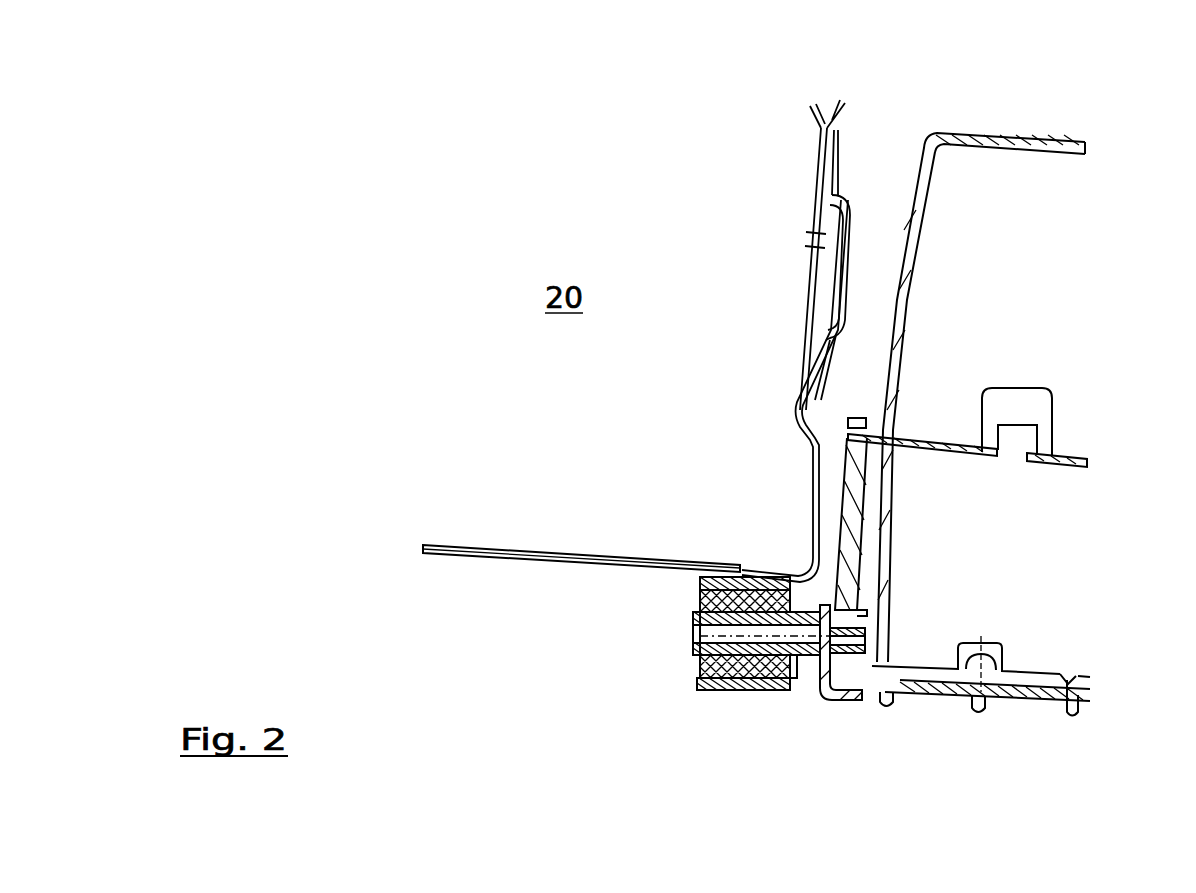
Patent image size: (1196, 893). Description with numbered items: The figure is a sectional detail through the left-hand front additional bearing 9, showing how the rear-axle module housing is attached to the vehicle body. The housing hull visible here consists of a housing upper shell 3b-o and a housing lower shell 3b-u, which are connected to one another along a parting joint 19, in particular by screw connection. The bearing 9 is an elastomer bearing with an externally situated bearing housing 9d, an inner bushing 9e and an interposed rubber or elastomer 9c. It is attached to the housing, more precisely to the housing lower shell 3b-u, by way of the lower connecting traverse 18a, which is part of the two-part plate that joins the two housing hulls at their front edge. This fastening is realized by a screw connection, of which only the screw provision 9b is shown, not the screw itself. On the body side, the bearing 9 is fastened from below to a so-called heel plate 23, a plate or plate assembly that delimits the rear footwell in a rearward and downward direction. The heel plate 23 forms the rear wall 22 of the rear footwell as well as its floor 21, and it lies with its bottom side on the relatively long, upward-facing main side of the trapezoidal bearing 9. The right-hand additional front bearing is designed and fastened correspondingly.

The housing upper shell 3b-o is at (1000, 136).
The housing lower shell 3b-u is at (840, 500).
The parting joint 19 is at (947, 450).
The rear wall 22 is at (798, 260).
The heel plate 23 is at (817, 490).
The floor 21 is at (513, 547).
The front additional bearing 9 is at (746, 545).
The screw provision 9b is at (723, 638).
The elastomer 9c is at (790, 670).
The bearing housing 9d is at (735, 572).
The inner bushing 9e is at (790, 570).
The lower connecting traverse 18a is at (833, 697).